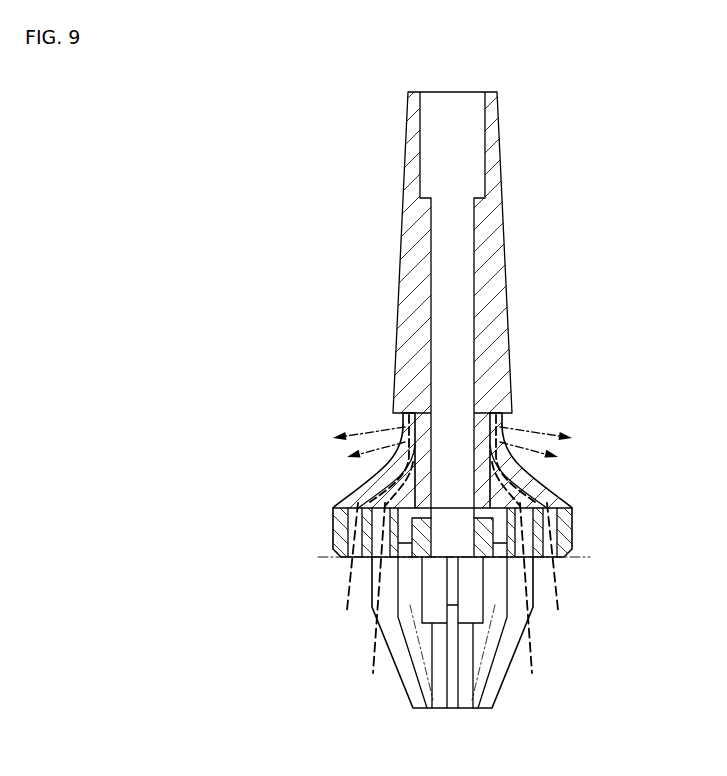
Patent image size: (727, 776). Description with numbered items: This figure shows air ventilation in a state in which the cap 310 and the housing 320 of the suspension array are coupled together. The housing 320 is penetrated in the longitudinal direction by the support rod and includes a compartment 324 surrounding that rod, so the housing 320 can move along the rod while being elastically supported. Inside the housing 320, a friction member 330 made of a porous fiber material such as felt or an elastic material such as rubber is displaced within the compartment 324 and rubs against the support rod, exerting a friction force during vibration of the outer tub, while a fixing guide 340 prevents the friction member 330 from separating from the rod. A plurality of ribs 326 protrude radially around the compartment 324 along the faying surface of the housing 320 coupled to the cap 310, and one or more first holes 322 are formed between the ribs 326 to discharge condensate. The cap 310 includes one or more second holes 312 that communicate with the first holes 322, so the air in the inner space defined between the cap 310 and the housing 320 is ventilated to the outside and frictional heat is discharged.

The cap 310 is at (536, 360).
The second holes 312 is at (503, 426).
The housing 320 is at (592, 534).
The first holes 322 is at (372, 583).
The compartment 324 is at (340, 488).
The ribs 326 is at (383, 657).
The friction member 330 is at (521, 600).
The fixing guide 340 is at (534, 560).